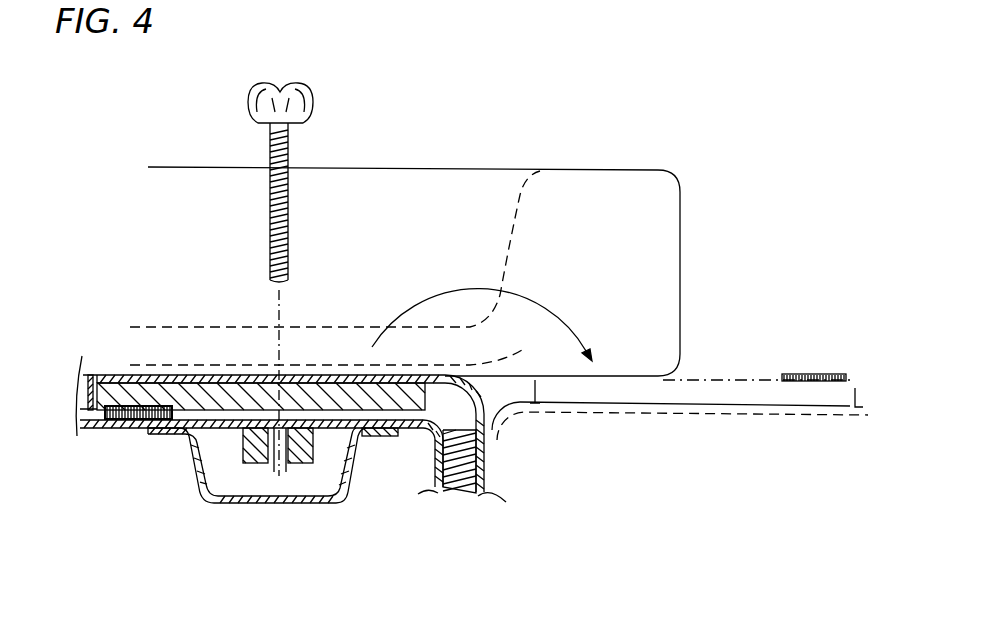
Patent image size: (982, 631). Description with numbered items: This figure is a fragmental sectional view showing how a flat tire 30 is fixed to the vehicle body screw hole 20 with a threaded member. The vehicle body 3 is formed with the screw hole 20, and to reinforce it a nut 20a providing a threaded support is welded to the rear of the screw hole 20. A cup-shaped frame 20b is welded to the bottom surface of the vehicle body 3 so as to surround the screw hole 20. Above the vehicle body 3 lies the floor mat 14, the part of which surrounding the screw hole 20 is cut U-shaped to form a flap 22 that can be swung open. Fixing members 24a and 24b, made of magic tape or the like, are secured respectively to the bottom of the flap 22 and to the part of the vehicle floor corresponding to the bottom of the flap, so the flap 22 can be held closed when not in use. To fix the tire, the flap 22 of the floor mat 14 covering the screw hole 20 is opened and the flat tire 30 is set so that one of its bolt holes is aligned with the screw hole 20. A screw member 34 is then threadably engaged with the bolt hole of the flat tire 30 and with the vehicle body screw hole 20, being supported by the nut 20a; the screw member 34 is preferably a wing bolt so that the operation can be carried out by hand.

The vehicle body 3 is at (197, 450).
The floor mat 14 is at (484, 398).
The vehicle body screw hole 20 is at (281, 474).
The nut 20a is at (253, 466).
The cup-shaped frame 20b is at (325, 505).
The flap 22 is at (383, 411).
The fixing member 24a is at (130, 392).
The fixing member 24b is at (126, 410).
The flat tire 30 is at (664, 241).
The screw member 34 is at (285, 352).